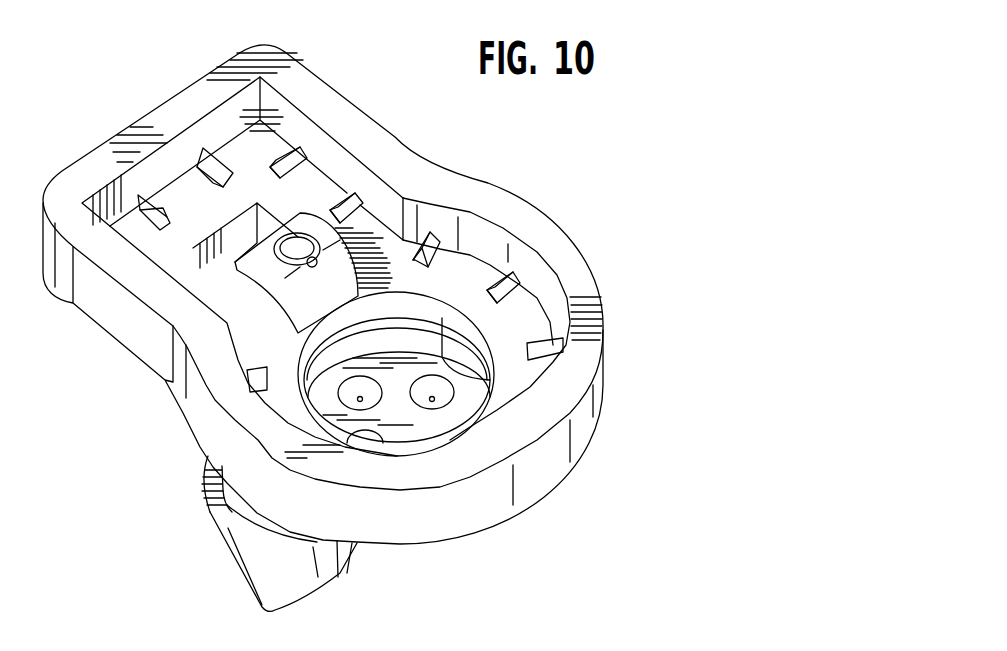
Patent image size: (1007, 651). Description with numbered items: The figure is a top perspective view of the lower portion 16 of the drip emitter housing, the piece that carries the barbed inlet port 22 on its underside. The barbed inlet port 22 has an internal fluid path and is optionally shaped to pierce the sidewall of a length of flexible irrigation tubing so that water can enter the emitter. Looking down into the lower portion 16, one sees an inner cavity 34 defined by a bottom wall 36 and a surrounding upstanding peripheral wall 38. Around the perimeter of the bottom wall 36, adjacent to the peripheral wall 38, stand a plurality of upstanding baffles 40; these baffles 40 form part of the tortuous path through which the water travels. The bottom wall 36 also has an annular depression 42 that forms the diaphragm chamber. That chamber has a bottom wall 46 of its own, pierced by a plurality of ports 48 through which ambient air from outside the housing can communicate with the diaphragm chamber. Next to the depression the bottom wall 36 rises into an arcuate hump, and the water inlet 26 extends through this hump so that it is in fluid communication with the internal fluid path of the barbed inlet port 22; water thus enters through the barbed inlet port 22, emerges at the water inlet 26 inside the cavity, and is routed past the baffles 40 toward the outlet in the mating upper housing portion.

The lower portion 16 is at (491, 168).
The barbed inlet port 22 is at (357, 562).
The water inlet 26 is at (303, 243).
The inner cavity 34 is at (237, 153).
The bottom wall 36 is at (467, 280).
The peripheral wall 38 is at (580, 421).
The baffles 40 is at (500, 298).
The annular depression 42 is at (465, 420).
The bottom wall 46 is at (432, 420).
The ports 48 is at (445, 405).